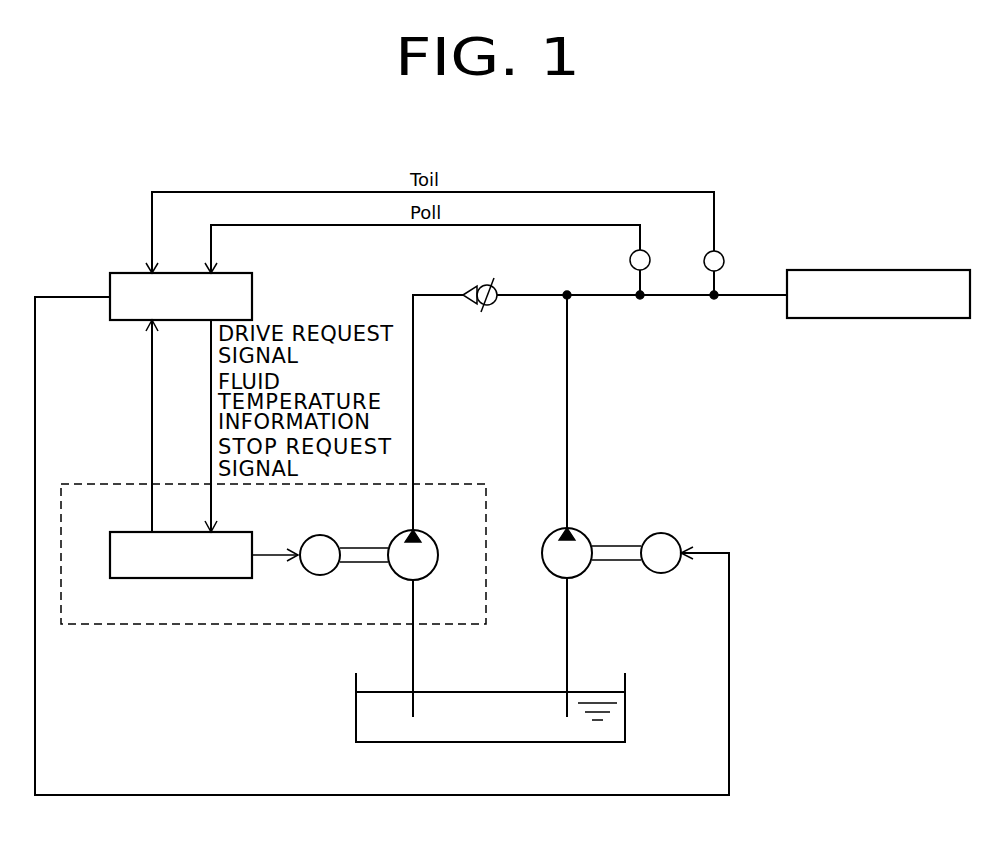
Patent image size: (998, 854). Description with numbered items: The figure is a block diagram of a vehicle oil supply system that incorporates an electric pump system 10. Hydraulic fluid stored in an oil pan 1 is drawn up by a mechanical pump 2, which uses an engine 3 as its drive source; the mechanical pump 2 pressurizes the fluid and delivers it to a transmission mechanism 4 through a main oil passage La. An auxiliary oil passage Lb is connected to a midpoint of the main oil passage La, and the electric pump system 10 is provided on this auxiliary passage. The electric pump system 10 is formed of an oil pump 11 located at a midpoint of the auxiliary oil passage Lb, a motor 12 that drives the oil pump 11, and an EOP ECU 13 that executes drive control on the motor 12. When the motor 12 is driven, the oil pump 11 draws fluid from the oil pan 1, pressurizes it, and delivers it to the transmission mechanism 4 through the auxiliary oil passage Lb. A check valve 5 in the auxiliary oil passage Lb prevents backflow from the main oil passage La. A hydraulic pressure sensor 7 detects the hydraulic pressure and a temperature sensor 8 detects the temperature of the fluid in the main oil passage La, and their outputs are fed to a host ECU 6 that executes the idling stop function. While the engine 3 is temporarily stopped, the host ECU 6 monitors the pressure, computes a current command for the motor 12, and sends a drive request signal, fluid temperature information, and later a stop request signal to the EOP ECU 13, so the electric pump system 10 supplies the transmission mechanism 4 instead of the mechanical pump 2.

The oil pan 1 is at (627, 708).
The mechanical pump 2 is at (585, 533).
The engine 3 is at (676, 534).
The transmission mechanism 4 is at (895, 272).
The check valve 5 is at (483, 278).
The host ECU 6 is at (228, 274).
The hydraulic pressure sensor 7 is at (646, 251).
The temperature sensor 8 is at (720, 253).
The electric pump system 10 is at (437, 484).
The oil pump 11 is at (430, 537).
The motor 12 is at (327, 537).
The EOP ECU 13 is at (230, 532).
The main oil passage La is at (570, 298).
The auxiliary oil passage Lb is at (440, 295).